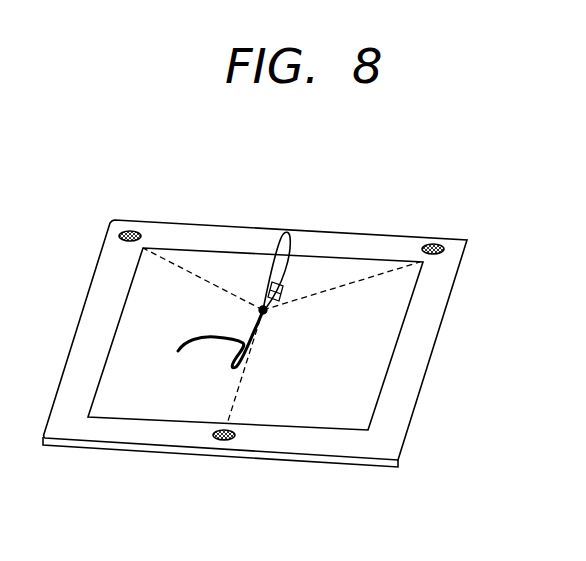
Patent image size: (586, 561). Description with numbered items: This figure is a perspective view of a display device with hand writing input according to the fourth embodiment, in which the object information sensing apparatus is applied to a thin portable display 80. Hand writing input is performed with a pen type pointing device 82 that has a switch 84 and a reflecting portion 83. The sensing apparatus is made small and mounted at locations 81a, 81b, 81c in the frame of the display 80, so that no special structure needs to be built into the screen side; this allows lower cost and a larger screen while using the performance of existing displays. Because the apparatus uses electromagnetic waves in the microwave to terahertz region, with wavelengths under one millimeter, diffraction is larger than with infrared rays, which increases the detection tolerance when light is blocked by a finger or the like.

The display 80 is at (422, 350).
The location in the frame of the display 81a is at (133, 231).
The location in the frame of the display 81b is at (443, 243).
The location in the frame of the display 81c is at (217, 442).
The pen type pointing device 82 is at (284, 230).
The reflecting portion 83 is at (257, 306).
The switch 84 is at (268, 283).